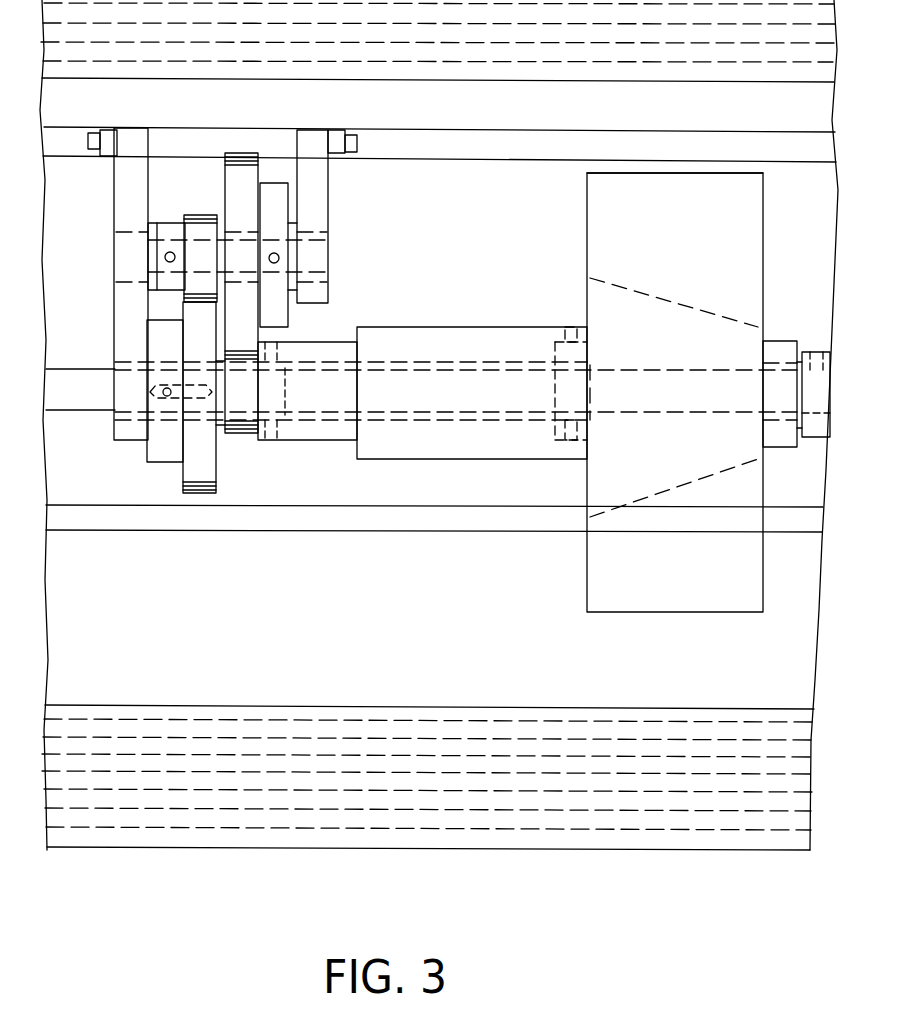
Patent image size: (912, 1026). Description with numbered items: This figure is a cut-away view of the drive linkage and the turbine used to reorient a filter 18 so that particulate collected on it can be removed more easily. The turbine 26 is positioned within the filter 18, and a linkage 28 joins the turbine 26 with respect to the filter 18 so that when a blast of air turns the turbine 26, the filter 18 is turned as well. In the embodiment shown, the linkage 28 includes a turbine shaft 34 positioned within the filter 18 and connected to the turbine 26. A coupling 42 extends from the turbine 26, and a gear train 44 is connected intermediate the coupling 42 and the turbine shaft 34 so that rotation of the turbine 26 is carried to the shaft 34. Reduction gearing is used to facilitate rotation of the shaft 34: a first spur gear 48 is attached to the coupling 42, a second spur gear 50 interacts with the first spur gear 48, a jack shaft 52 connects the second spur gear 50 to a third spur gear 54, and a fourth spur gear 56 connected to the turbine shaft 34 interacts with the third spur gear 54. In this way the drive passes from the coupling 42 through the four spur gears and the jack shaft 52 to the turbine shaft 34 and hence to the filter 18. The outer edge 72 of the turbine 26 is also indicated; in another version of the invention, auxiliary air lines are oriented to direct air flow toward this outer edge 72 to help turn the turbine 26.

The filter 18 is at (418, 830).
The turbine 26 is at (708, 597).
The linkage 28 is at (540, 598).
The turbine shaft 34 is at (72, 413).
The coupling 42 is at (494, 327).
The gear train 44 is at (357, 123).
The first spur gear 48 is at (245, 435).
The second spur gear 50 is at (240, 153).
The jack shaft 52 is at (222, 233).
The third spur gear 54 is at (201, 213).
The fourth spur gear 56 is at (195, 494).
The outer edge of the turbine 72 is at (741, 173).